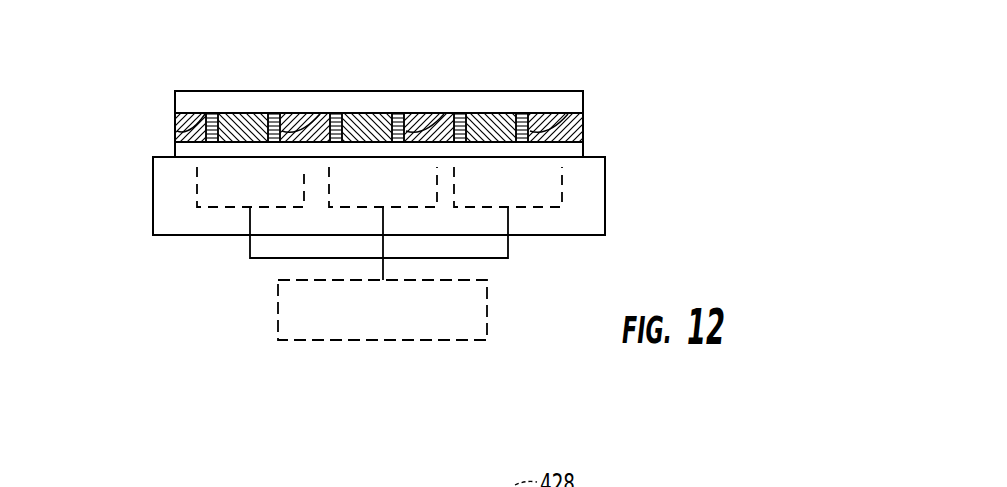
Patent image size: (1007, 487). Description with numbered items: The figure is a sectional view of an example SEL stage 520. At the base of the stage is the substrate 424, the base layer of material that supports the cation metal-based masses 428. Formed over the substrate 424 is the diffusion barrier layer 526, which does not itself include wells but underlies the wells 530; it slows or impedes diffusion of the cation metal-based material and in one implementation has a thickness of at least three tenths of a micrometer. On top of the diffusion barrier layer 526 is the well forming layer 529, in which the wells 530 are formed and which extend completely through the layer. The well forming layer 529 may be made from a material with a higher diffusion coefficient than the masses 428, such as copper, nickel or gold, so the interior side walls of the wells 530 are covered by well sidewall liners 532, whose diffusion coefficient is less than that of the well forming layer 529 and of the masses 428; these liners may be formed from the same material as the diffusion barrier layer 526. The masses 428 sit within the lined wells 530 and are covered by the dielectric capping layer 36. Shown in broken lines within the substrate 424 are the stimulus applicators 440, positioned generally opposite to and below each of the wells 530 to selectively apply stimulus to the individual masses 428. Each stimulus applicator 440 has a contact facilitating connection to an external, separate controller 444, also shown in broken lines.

The SEL stage 520 is at (73, 144).
The dielectric capping layer 36 is at (583, 91).
The well forming layer 529 is at (583, 118).
The diffusion barrier layer 526 is at (583, 153).
The cation metal-based masses 428 is at (247, 118).
The wells 530 is at (205, 125).
The well sidewall liners 532 is at (200, 125).
The substrate 424 is at (605, 216).
The stimulus applicators 440 is at (339, 208).
The controller 444 is at (487, 290).